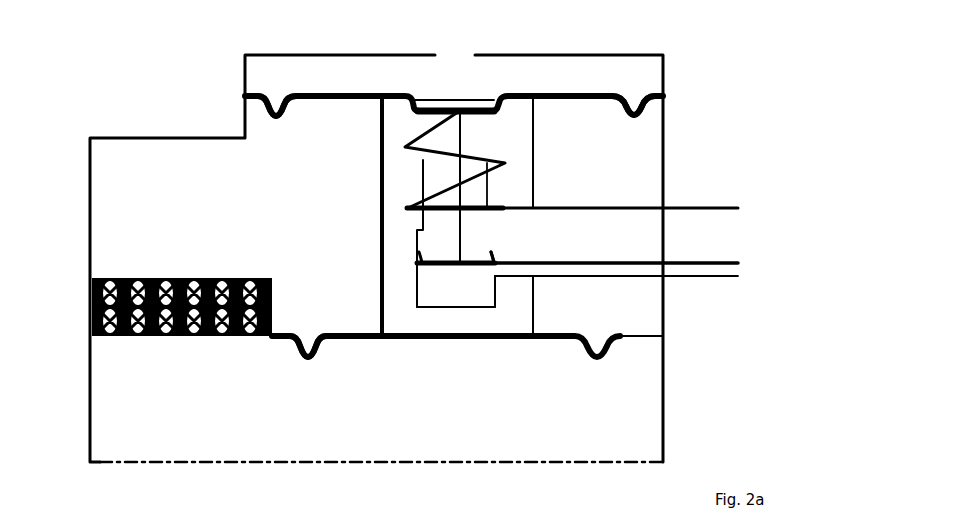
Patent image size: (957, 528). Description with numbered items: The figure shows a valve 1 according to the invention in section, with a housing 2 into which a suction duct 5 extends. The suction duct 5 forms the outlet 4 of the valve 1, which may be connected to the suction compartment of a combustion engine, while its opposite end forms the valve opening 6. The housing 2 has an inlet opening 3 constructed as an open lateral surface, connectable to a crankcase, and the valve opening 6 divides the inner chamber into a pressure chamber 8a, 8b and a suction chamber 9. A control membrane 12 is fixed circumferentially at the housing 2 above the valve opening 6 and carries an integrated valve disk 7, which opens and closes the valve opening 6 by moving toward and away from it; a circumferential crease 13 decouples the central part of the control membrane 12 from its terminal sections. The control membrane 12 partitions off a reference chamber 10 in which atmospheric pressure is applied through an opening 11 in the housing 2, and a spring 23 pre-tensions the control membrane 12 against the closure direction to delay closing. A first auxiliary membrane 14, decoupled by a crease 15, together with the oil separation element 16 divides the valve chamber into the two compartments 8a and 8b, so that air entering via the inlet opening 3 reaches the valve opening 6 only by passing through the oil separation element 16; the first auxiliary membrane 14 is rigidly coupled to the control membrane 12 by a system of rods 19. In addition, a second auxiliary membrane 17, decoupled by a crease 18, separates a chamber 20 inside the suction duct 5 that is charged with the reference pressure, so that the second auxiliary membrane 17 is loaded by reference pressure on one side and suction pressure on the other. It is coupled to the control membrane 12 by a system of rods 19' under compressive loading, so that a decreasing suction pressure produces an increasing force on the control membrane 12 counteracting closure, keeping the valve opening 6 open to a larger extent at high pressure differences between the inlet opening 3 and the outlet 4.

The valve 1 is at (398, 265).
The housing 2 is at (665, 140).
The inlet opening 3 is at (360, 463).
The outlet 4 is at (743, 237).
The suction duct 5 is at (622, 238).
The valve opening 6 is at (438, 163).
The valve disk 7 is at (486, 116).
The pressure chamber compartment 8a is at (187, 401).
The pressure chamber compartment 8b is at (179, 243).
The suction chamber 9 is at (694, 238).
The reference chamber 10 is at (642, 88).
The opening 11 is at (442, 59).
The control membrane 12 is at (342, 100).
The crease 13 is at (271, 118).
The first auxiliary membrane 14 is at (500, 341).
The crease 15 is at (297, 348).
The oil separation element 16 is at (112, 340).
The second auxiliary membrane 17 is at (452, 266).
The crease 18 is at (492, 250).
The system of rods 19 is at (464, 216).
The system of rods 19' is at (481, 187).
The chamber 20 is at (497, 290).
The spring 23 is at (498, 176).